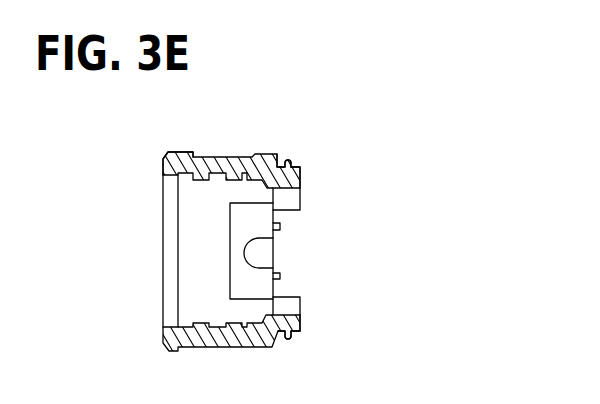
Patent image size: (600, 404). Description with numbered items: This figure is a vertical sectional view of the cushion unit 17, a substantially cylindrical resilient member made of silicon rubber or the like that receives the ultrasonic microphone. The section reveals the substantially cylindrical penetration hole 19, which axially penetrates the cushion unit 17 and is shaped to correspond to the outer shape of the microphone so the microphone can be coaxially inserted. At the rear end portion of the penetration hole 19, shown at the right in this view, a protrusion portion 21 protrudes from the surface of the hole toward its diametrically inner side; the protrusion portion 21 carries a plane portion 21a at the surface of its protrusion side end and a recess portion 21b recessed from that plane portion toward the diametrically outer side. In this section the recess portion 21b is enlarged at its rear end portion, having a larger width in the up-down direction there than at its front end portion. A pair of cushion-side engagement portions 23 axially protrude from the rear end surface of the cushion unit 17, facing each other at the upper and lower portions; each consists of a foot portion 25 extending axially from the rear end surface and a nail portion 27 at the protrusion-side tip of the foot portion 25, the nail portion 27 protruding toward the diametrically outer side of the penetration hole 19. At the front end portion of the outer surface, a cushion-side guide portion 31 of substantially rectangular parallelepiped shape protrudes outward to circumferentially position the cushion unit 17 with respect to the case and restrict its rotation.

The cushion unit 17 is at (227, 222).
The penetration hole 19 is at (200, 218).
The protrusion portion 21 is at (297, 251).
The plane portion 21a is at (258, 217).
The recess portion 21b is at (263, 253).
The cushion-side engagement portion 23 is at (327, 222).
The foot portion 25 is at (277, 165).
The nail portion 27 is at (300, 162).
The cushion-side guide portion 31 is at (192, 151).